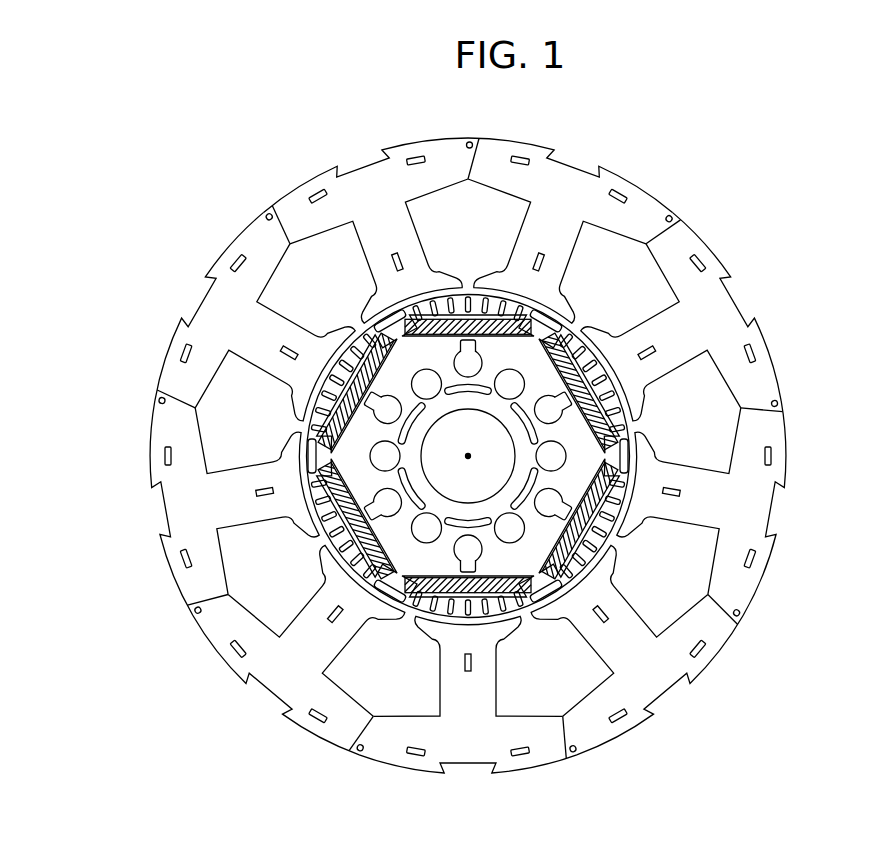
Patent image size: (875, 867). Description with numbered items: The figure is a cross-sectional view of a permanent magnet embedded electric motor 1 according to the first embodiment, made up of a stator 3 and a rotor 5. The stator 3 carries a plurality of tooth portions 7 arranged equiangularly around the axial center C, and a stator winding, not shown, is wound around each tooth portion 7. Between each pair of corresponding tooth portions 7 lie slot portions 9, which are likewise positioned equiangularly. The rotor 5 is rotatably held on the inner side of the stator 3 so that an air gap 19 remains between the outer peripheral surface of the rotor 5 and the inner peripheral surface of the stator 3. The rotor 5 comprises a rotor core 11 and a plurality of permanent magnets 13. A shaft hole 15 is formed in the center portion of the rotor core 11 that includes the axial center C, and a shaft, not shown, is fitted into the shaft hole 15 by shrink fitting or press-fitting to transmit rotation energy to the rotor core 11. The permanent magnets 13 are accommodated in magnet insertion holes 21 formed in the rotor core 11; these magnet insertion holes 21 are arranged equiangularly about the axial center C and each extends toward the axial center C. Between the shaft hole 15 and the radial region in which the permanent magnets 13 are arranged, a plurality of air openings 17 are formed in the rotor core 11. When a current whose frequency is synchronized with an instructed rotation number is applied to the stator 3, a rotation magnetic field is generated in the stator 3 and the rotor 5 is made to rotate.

The permanent magnet embedded electric motor 1 is at (44, 217).
The stator 3 is at (226, 238).
The rotor 5 is at (322, 542).
The tooth portions 7 is at (272, 323).
The slot portions 9 is at (327, 252).
The rotor core 11 is at (487, 477).
The permanent magnets 13 is at (474, 320).
The shaft hole 15 is at (593, 573).
The air openings 17 is at (428, 520).
The air gap 19 is at (636, 452).
The magnet insertion holes 21 is at (567, 392).
The axial center C is at (468, 456).